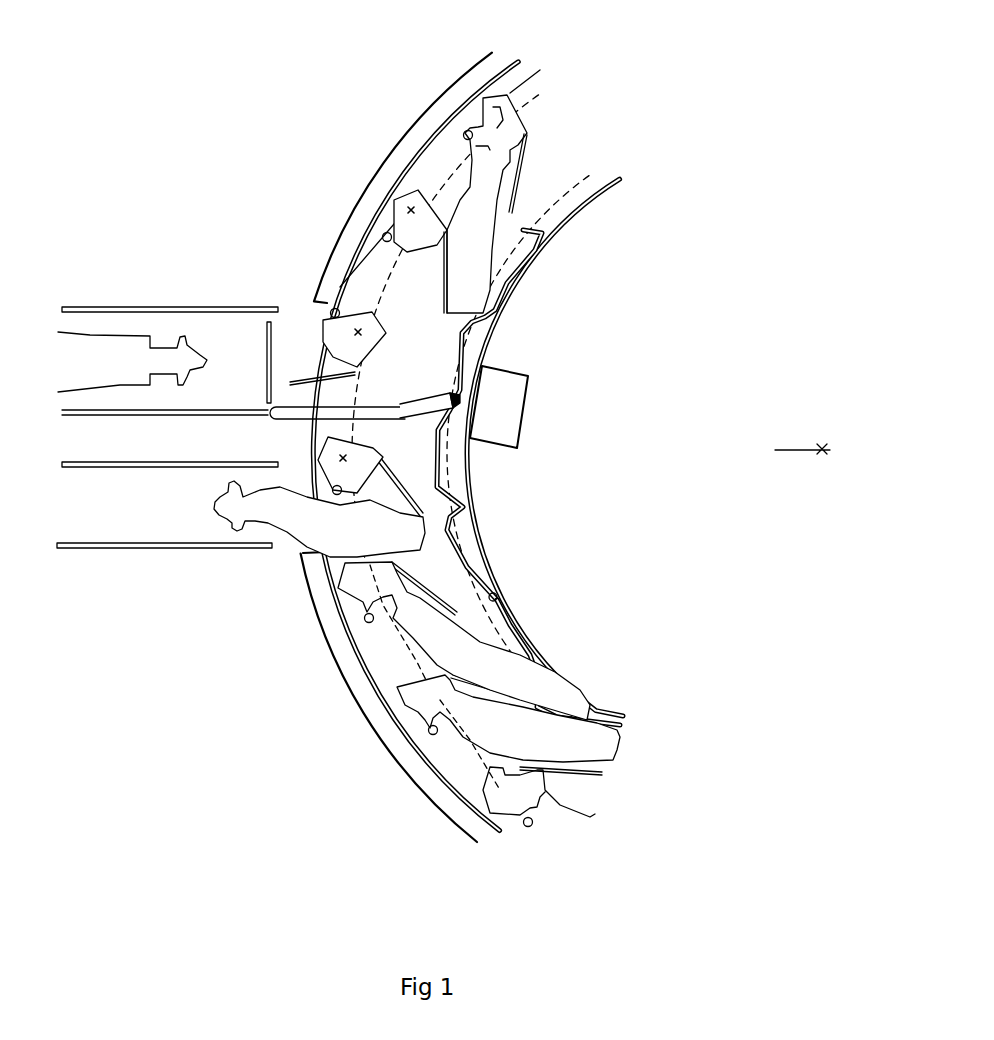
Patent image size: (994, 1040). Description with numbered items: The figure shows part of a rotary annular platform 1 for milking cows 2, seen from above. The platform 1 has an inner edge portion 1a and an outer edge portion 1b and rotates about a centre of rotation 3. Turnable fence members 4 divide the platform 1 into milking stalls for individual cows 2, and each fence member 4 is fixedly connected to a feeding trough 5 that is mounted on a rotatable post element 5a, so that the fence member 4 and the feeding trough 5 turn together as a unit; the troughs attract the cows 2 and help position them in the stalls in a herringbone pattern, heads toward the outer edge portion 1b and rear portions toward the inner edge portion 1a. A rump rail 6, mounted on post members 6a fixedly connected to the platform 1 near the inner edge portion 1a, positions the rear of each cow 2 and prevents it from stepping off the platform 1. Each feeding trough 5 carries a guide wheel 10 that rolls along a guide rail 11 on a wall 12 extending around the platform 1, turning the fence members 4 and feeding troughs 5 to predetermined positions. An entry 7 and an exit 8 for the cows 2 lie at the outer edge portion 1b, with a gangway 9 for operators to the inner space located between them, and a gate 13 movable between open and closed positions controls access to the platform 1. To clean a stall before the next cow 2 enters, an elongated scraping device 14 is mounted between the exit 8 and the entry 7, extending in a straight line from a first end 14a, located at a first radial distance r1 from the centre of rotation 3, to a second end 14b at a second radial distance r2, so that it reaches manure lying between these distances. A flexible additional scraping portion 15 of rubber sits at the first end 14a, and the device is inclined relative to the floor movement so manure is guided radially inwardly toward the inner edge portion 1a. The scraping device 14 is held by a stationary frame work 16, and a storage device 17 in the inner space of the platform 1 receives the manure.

The rotary annular platform 1 is at (562, 113).
The inner edge portion 1a is at (543, 253).
The outer edge portion 1b is at (487, 80).
The cow 2 is at (472, 207).
The centre of rotation 3 is at (790, 451).
The turnable fence member 4 is at (450, 267).
The feeding trough 5 is at (405, 230).
The rotatable post element 5a is at (410, 208).
The rump rail 6 is at (490, 610).
The post member 6a is at (493, 600).
The entry 7 is at (167, 335).
The exit 8 is at (155, 513).
The gangway 9 is at (156, 450).
The guide wheel 10 is at (365, 618).
The guide rail 11 is at (373, 647).
The wall 12 is at (382, 720).
The gate 13 is at (265, 330).
The scraping device 14 is at (420, 407).
The first end 14a is at (450, 395).
The second end 14b is at (350, 420).
The additional scraping portion 15 is at (453, 392).
The stationary frame work 16 is at (377, 410).
The storage device 17 is at (498, 403).
The first radial distance r1 is at (473, 332).
The second radial distance r2 is at (378, 297).